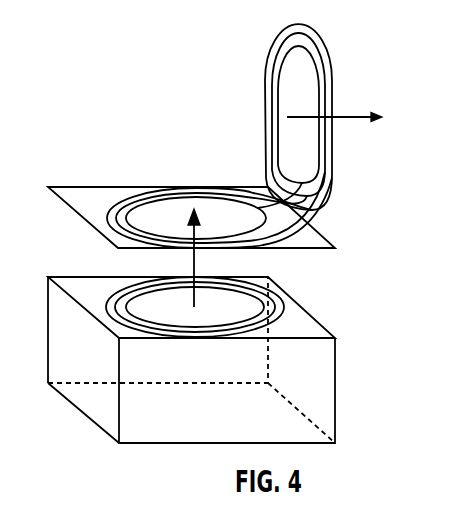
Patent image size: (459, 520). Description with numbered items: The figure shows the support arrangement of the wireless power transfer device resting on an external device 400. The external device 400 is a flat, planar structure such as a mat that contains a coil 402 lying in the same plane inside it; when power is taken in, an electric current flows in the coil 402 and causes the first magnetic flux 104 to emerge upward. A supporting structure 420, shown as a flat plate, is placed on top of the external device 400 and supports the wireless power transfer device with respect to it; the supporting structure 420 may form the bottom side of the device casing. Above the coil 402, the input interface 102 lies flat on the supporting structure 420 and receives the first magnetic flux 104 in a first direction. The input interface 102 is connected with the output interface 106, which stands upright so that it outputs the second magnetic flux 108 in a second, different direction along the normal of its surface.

The input interface 102 is at (130, 197).
The first magnetic flux 104 is at (192, 288).
The output interface 106 is at (267, 62).
The second magnetic flux 108 is at (347, 117).
The external device 400 is at (330, 333).
The coil 402 is at (282, 302).
The supporting structure 420 is at (83, 217).